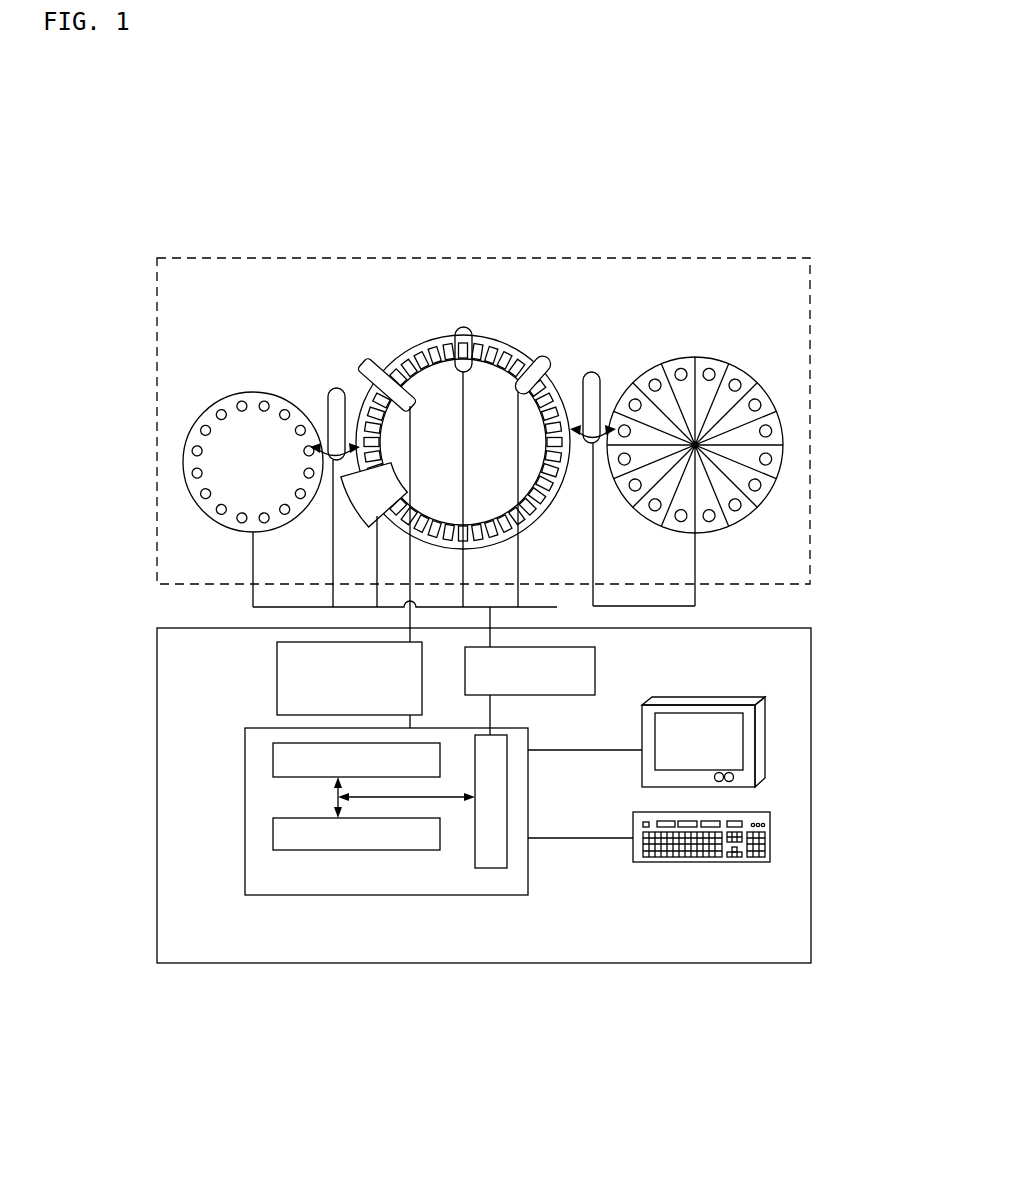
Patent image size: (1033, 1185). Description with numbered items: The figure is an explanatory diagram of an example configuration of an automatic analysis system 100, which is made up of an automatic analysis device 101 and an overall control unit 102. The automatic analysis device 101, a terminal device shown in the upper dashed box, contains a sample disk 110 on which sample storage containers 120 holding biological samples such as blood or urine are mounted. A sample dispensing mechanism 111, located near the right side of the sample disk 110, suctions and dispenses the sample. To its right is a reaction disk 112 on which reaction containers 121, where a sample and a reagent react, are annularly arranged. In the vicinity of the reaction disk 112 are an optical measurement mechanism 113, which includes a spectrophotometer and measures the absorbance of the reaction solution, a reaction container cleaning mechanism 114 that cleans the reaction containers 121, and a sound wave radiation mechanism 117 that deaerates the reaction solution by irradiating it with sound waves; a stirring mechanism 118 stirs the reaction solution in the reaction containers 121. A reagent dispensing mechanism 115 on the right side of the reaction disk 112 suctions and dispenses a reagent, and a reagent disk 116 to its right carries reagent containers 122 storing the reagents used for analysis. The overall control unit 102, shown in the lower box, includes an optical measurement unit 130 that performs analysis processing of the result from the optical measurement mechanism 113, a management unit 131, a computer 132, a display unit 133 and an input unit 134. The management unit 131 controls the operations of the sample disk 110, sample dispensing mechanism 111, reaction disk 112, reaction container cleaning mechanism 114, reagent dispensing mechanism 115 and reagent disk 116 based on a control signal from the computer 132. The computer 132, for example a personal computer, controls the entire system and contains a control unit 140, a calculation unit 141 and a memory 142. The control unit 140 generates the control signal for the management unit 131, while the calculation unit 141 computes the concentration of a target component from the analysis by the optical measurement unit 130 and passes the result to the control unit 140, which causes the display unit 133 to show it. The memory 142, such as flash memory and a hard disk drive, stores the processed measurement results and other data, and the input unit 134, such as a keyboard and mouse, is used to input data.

The automatic analysis system 100 is at (745, 222).
The automatic analysis device 101 is at (535, 258).
The overall control unit 102 is at (487, 965).
The sample disk 110 is at (190, 427).
The sample dispensing mechanism 111 is at (330, 388).
The reaction disk 112 is at (405, 350).
The optical measurement mechanism 113 is at (360, 365).
The reaction container cleaning mechanism 114 is at (350, 507).
The reagent dispensing mechanism 115 is at (598, 387).
The reagent disk 116 is at (770, 397).
The sound wave radiation mechanism 117 is at (550, 363).
The stirring mechanism 118 is at (470, 330).
The sample storage container 120 is at (238, 397).
The reaction container 121 is at (445, 342).
The reagent container 122 is at (733, 380).
The optical measurement unit 130 is at (277, 678).
The management unit 131 is at (595, 675).
The computer 132 is at (290, 896).
The display unit 133 is at (700, 697).
The input unit 134 is at (707, 864).
The control unit 140 is at (508, 792).
The calculation unit 141 is at (273, 831).
The memory 142 is at (273, 760).